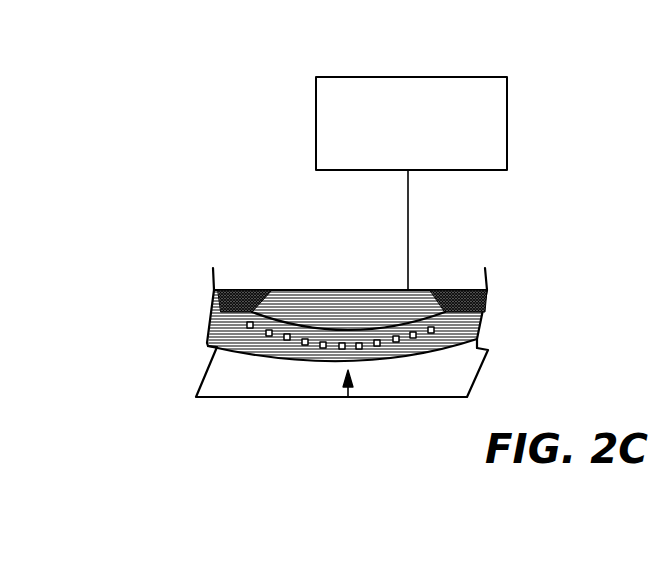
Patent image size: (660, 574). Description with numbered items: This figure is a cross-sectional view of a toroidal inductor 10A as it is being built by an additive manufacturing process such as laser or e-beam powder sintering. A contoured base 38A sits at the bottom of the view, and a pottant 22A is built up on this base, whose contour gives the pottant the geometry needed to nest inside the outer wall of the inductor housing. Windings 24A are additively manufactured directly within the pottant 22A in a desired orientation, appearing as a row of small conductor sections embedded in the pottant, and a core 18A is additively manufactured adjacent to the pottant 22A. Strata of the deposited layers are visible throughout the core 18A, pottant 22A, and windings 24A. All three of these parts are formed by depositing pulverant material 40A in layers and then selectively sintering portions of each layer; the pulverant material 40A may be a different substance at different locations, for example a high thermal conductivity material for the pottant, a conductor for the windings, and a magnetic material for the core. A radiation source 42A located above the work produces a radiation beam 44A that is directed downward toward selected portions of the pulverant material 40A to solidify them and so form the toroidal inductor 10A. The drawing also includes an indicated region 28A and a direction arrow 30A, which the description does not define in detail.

The toroidal inductor 10A is at (185, 178).
The core 18A is at (308, 305).
The pottant 22A is at (490, 317).
The windings 24A is at (303, 341).
The light absorbing region 28A is at (242, 291).
The light output direction 30A is at (348, 386).
The base 38A is at (403, 383).
The pulverant material 40A is at (467, 306).
The radiation source 42A is at (508, 122).
The radiation beam 44A is at (409, 207).